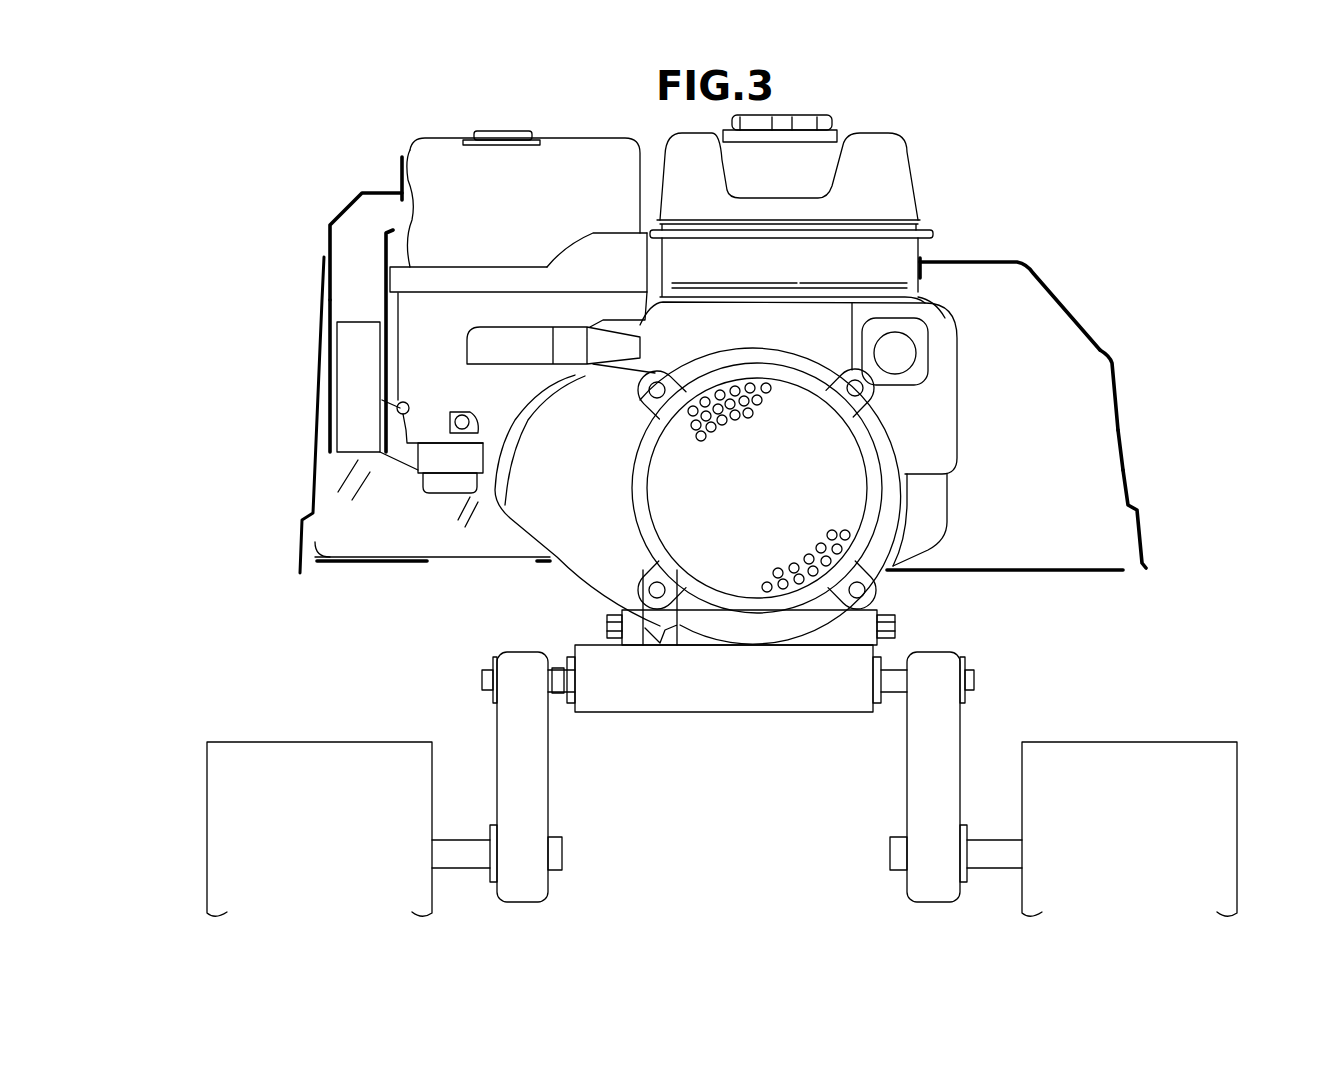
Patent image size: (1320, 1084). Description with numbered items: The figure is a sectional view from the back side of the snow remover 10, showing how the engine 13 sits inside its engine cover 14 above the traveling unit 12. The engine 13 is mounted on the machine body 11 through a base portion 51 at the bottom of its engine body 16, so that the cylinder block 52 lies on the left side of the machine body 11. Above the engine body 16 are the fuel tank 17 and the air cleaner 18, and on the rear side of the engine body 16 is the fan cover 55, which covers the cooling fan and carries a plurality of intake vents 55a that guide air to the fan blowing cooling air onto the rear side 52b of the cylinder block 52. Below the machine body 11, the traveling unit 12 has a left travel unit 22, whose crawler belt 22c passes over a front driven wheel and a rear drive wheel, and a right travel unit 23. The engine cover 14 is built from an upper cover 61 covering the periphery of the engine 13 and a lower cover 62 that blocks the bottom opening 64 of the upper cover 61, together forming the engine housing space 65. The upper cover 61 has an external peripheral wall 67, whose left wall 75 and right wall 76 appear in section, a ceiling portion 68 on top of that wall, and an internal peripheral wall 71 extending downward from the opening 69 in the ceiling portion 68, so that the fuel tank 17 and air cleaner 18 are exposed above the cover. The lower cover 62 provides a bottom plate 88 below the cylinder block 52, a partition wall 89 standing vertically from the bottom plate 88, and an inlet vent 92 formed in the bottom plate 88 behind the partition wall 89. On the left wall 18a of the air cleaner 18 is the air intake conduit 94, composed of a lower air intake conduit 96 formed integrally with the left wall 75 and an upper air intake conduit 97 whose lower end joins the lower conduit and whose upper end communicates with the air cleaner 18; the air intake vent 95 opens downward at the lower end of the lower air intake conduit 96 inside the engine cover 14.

The snow remover 10 is at (1062, 154).
The machine body 11 is at (763, 700).
The traveling unit 12 is at (1105, 654).
The engine 13 is at (969, 355).
The engine cover 14 is at (1060, 244).
The engine body 16 is at (887, 587).
The fuel tank 17 is at (878, 145).
The air cleaner 18 is at (440, 152).
The left wall 18a is at (405, 185).
The left travel unit 22 is at (218, 734).
The crawler belt 22c is at (325, 745).
The right travel unit 23 is at (1193, 728).
The base portion 51 is at (840, 630).
The cylinder block 52 is at (480, 370).
The rear side 52b is at (507, 373).
The fan cover 55 is at (876, 437).
The intake vents 55a is at (848, 540).
The upper cover 61 is at (1136, 350).
The lower cover 62 is at (1082, 566).
The bottom opening 64 is at (330, 566).
The engine housing space 65 is at (962, 316).
The external peripheral wall 67 is at (1128, 433).
The ceiling portion 68 is at (965, 262).
The opening 69 is at (918, 268).
The internal peripheral wall 71 is at (915, 270).
The left wall 75 is at (314, 446).
The right wall 76 is at (1130, 467).
The bottom plate 88 is at (370, 563).
The partition wall 89 is at (490, 533).
The inlet vent 92 is at (435, 563).
The air intake conduit 94 is at (343, 181).
The air intake vent 95 is at (333, 492).
The lower air intake conduit 96 is at (330, 410).
The upper air intake conduit 97 is at (328, 218).